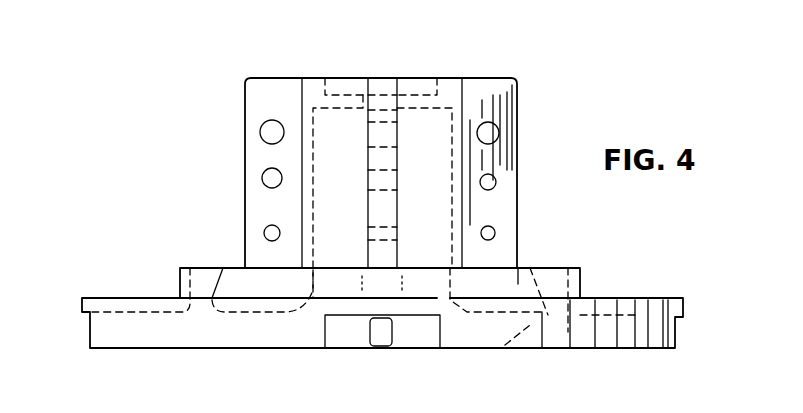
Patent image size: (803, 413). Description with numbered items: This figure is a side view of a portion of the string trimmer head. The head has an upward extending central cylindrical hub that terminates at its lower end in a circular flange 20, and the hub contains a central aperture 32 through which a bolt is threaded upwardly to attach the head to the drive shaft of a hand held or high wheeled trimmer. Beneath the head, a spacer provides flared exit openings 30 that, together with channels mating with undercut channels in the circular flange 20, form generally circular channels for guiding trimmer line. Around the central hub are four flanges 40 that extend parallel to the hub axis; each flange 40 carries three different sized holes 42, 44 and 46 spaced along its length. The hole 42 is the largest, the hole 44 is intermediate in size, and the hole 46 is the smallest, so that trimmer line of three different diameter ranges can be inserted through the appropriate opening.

The circular flange 20 is at (150, 297).
The flared exit opening 30 is at (402, 337).
The central aperture 32 is at (400, 96).
The flange 40 is at (248, 95).
The hole 42 is at (499, 133).
The hole 44 is at (496, 182).
The hole 46 is at (495, 234).